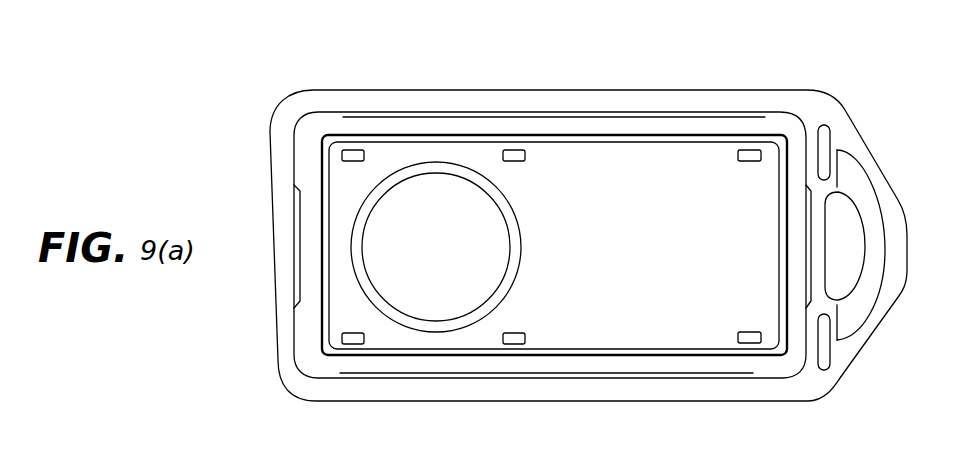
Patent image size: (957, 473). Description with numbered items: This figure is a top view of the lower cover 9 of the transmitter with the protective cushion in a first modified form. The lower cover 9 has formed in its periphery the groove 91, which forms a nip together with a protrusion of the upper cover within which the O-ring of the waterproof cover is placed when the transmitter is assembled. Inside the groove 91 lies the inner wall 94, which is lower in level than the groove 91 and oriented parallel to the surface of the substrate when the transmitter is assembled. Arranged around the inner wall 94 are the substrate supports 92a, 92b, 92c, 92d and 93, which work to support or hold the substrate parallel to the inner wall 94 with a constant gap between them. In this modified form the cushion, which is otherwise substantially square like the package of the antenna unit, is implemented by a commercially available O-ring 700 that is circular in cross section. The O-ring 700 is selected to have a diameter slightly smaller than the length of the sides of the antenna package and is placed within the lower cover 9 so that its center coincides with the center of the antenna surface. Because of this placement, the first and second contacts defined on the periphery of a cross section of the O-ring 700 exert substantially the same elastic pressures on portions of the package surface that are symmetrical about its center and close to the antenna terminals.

The lower cover 9 is at (482, 90).
The groove 91 is at (305, 128).
The substrate support 92a is at (357, 345).
The substrate support 92b is at (510, 345).
The substrate support 92c is at (541, 130).
The substrate support 92d is at (375, 132).
The substrate support 93 is at (745, 150).
The inner wall 94 is at (362, 173).
The O-ring 700 is at (357, 282).